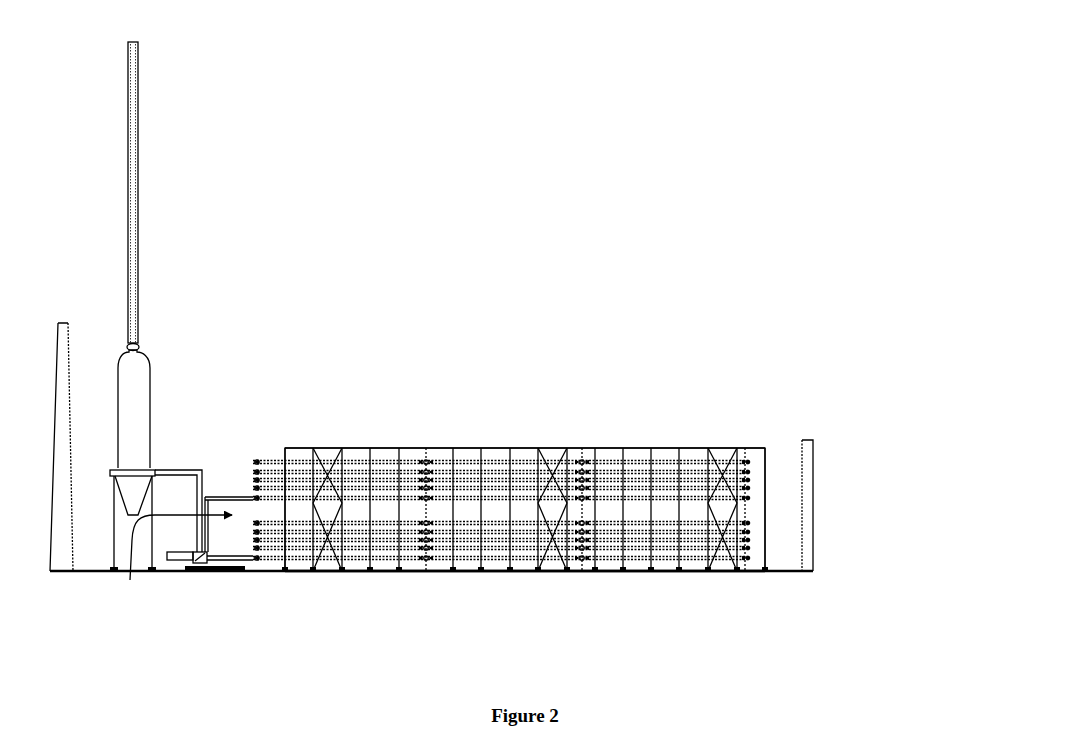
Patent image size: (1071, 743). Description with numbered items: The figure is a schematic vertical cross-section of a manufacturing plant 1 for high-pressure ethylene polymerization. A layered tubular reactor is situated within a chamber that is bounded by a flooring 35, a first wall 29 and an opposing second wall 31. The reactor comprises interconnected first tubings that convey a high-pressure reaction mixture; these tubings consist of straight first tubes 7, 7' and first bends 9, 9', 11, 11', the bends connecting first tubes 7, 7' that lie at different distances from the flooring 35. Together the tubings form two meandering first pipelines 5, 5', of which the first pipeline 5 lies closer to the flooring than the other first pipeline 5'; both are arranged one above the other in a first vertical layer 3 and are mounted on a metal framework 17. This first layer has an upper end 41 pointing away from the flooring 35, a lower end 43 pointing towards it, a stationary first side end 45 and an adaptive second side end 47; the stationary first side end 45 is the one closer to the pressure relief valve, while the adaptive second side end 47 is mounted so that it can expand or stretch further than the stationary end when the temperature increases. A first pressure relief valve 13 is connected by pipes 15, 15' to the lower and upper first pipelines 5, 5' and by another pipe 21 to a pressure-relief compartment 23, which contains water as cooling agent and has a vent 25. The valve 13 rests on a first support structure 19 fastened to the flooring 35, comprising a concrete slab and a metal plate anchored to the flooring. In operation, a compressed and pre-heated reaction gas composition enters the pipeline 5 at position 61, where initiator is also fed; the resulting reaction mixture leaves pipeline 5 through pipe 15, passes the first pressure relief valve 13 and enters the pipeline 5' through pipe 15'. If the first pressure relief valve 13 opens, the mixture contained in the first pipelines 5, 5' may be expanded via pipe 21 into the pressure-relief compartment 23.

The manufacturing plant 1 is at (758, 101).
The first vertical layer 3 is at (519, 402).
The first pipeline 5 is at (224, 493).
The first pipeline 5' is at (244, 433).
The first tubes 7 is at (501, 584).
The first tubes 7' is at (501, 443).
The first bends 9 is at (794, 553).
The first bends 9' is at (796, 480).
The first bends 11 is at (242, 593).
The first bends 11' is at (228, 416).
The first pressure relief valve 13 is at (188, 574).
The pipe 15 is at (263, 596).
The pipe 15' is at (222, 446).
The metal framework 17 is at (340, 447).
The first support structure 19 is at (186, 573).
The pipe 21 is at (200, 523).
The pressure-relief compartment 23 is at (140, 367).
The vent 25 is at (133, 246).
The first wall 29 is at (62, 323).
The second wall 31 is at (812, 440).
The flooring 35 is at (344, 577).
The upper end 41 is at (638, 435).
The lower end 43 is at (661, 576).
The stationary first side end 45 is at (131, 575).
The adaptive second side end 47 is at (771, 440).
The position 61 is at (762, 522).